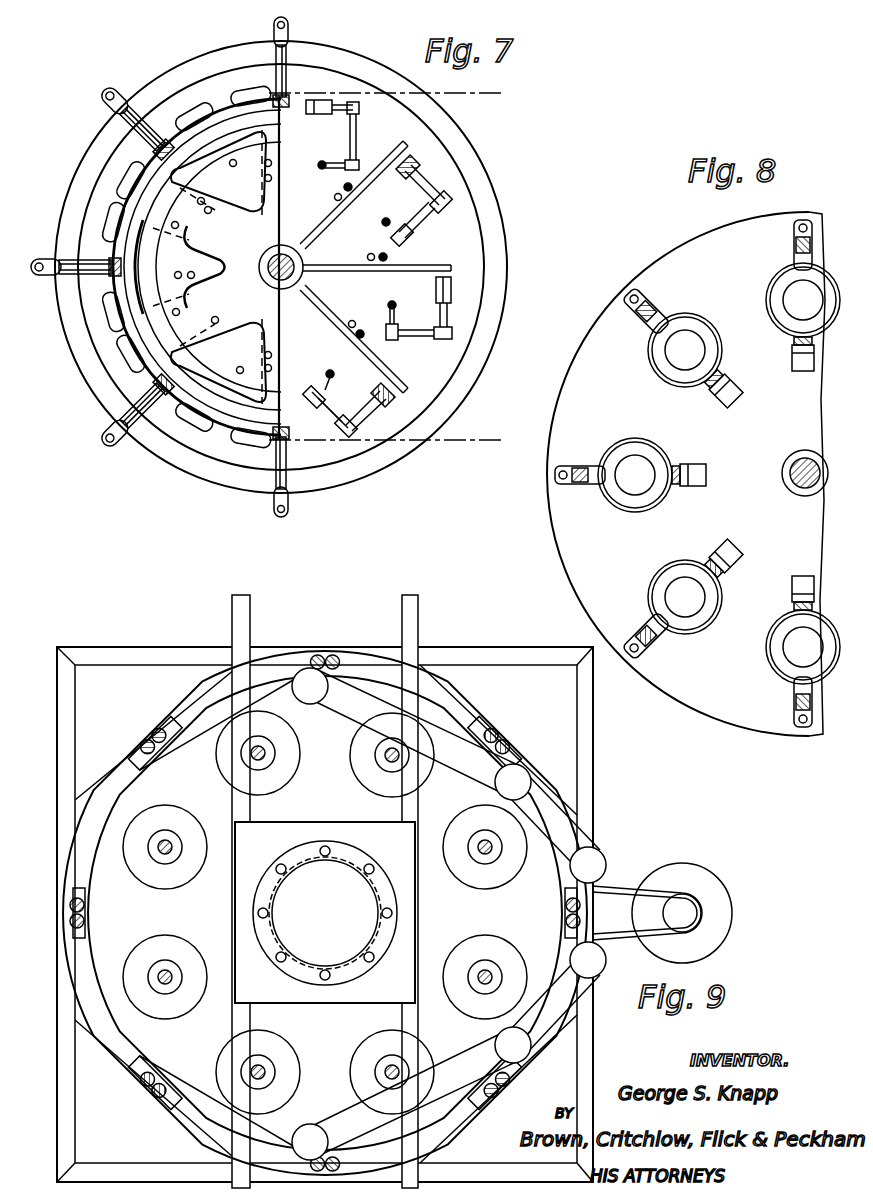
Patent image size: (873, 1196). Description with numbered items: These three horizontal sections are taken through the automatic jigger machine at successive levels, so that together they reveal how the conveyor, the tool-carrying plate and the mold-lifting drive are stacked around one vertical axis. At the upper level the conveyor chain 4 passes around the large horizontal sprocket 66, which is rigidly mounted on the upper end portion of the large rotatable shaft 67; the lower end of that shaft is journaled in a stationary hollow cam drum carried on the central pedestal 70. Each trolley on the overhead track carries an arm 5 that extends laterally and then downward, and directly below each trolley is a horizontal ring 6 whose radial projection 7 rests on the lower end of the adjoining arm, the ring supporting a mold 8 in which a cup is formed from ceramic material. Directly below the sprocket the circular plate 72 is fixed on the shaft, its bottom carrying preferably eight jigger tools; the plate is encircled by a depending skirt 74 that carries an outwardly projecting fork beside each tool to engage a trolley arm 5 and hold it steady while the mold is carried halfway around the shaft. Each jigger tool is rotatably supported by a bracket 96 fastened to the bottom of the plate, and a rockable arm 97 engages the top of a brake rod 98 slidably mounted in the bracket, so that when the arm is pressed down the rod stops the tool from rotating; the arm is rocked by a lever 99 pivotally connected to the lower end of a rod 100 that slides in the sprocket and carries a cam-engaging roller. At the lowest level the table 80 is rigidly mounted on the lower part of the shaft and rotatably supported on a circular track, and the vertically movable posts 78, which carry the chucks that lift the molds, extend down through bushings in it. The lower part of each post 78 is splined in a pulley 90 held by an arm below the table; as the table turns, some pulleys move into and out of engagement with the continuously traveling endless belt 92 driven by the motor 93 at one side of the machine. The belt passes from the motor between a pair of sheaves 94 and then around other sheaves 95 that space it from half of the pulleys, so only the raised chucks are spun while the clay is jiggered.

In FIG. 7, the conveyor chain 4 is at (179, 116).
In FIG. 7, the arm 5 is at (59, 255).
In FIG. 8, the arm 5 is at (575, 470).
In FIG. 8, the horizontal ring 6 is at (615, 507).
In FIG. 8, the radial projection 7 is at (588, 482).
In FIG. 8, the mold 8 is at (645, 498).
In FIG. 7, the horizontal sprocket 66 is at (209, 123).
In FIG. 7, the rotatable shaft 67 is at (261, 256).
In FIG. 8, the rotatable shaft 67 is at (801, 462).
In FIG. 9, the central pedestal 70 is at (345, 870).
In FIG. 7, the circular plate 72 is at (97, 189).
In FIG. 7, the depending skirt 74 is at (90, 150).
In FIG. 9, the vertically movable post 78 is at (265, 757).
In FIG. 8, the table 80 is at (702, 250).
In FIG. 9, the pulley 90 is at (172, 892).
In FIG. 9, the endless belt 92 is at (608, 877).
In FIG. 9, the motor 93 is at (714, 868).
In FIG. 9, the sheaves 94 is at (596, 904).
In FIG. 9, the sheaves 95 is at (312, 700).
In FIG. 7, the bracket 96 is at (409, 167).
In FIG. 7, the arm 97 is at (421, 185).
In FIG. 7, the brake rod 98 is at (417, 184).
In FIG. 7, the lever 99 is at (391, 229).
In FIG. 7, the rod 100 is at (379, 217).